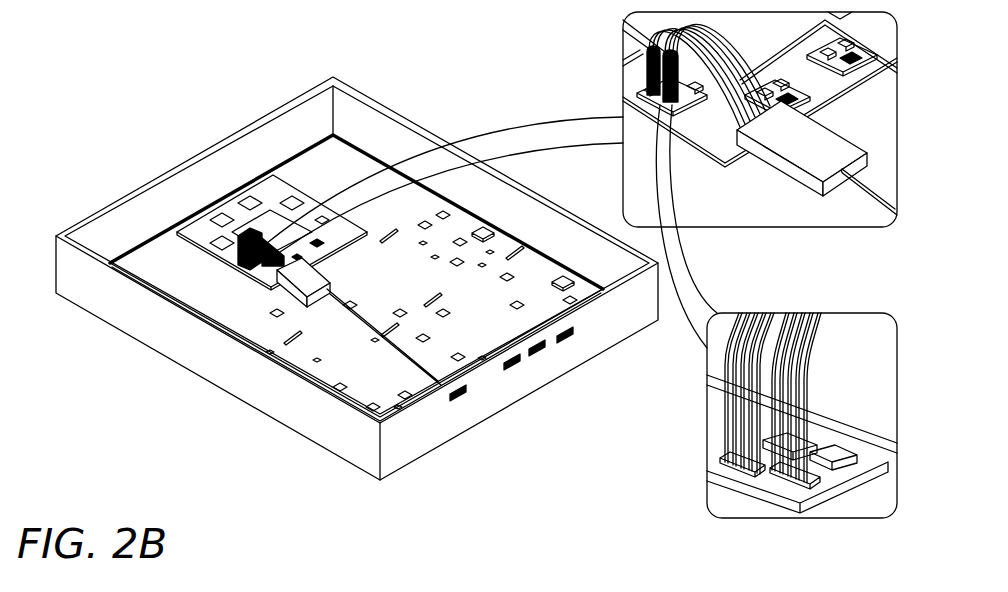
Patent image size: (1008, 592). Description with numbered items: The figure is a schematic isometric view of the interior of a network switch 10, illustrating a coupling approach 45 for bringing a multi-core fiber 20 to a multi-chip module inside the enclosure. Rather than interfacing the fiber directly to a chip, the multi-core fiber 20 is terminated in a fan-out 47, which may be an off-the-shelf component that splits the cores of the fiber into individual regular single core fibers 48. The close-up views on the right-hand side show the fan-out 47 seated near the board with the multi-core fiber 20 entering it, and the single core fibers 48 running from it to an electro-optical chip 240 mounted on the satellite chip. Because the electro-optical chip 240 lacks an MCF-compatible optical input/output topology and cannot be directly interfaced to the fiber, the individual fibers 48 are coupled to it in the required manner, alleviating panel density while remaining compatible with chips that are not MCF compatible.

The network switch 10 is at (153, 110).
The coupling approach 45 is at (288, 293).
The fan-out 47 is at (815, 142).
The multi-core fiber 20 is at (870, 203).
The single core fibers 48 is at (720, 410).
The electro-optical chip 240 is at (816, 489).